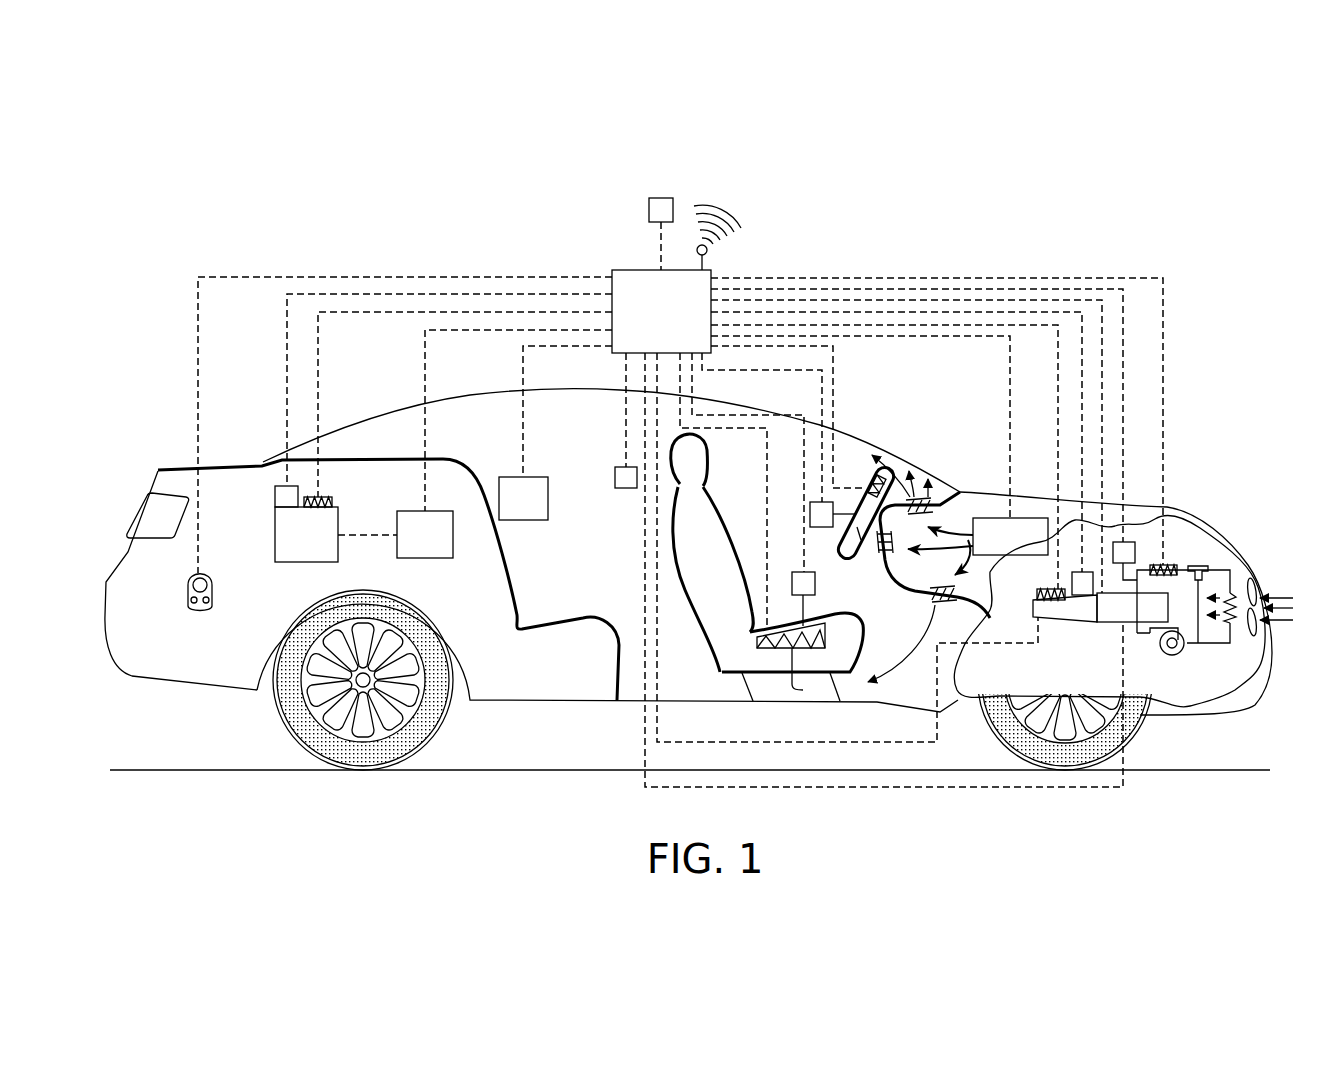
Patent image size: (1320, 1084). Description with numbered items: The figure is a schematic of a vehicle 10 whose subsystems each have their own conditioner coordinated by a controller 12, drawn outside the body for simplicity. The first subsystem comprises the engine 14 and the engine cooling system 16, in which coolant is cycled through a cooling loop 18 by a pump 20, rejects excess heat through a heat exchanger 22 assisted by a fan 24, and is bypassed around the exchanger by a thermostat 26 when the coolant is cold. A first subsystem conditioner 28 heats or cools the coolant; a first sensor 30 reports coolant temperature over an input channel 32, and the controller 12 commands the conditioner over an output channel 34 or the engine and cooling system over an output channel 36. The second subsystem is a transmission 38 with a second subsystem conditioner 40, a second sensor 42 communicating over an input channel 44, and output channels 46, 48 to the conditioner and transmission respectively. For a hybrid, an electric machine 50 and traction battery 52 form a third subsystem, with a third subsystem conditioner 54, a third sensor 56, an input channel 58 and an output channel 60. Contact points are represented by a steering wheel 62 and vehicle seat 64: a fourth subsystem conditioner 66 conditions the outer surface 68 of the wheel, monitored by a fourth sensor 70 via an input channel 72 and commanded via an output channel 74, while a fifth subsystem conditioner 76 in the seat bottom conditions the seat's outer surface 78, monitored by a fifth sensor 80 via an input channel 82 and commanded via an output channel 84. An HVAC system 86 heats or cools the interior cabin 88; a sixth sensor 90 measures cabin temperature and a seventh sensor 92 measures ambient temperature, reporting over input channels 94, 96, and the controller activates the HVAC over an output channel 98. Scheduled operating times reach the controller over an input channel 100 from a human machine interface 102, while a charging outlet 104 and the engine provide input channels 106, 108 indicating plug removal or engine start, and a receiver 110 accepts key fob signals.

The vehicle 10 is at (305, 172).
The controller 12 is at (635, 270).
The engine 14 is at (1110, 623).
The engine cooling system 16 is at (1200, 552).
The cooling loop 18 is at (1262, 663).
The pump 20 is at (1175, 657).
The heat exchanger 22 is at (1236, 597).
The fan 24 is at (1255, 588).
The thermostat 26 is at (1203, 565).
The first subsystem conditioner 28 is at (1170, 565).
The first sensor 30 is at (1135, 552).
The input channel 32 is at (1123, 439).
The output channel 34 is at (1163, 298).
The output channel 36 is at (1102, 370).
The transmission 38 is at (1062, 623).
The second subsystem conditioner 40 is at (1037, 597).
The second sensor 42 is at (1072, 583).
The input channel 44 is at (1082, 404).
The output channel 46 is at (1058, 463).
The output channel 48 is at (912, 742).
The electric machine 50 is at (453, 537).
The traction battery 52 is at (275, 548).
The third subsystem conditioner 54 is at (325, 497).
The third sensor 56 is at (275, 497).
The input channel 58 is at (287, 405).
The output channel 60 is at (318, 385).
The steering wheel 62 is at (868, 552).
The vehicle seat 64 is at (716, 493).
The fourth subsystem conditioner 66 is at (882, 473).
The outer surface 68 is at (860, 541).
The fourth sensor 70 is at (810, 518).
The input channel 72 is at (762, 372).
The output channel 74 is at (833, 383).
The fifth subsystem conditioner 76 is at (812, 675).
The outer surface 78 is at (828, 622).
The fifth sensor 80 is at (795, 572).
The input channel 82 is at (804, 470).
The output channel 84 is at (767, 478).
The HVAC system 86 is at (993, 518).
The interior cabin 88 is at (554, 452).
The sixth sensor 90 is at (626, 489).
The seventh sensor 92 is at (661, 198).
The input channel 94 is at (626, 441).
The input channel 96 is at (659, 245).
The output channel 98 is at (912, 337).
The input channel 100 is at (523, 441).
The human machine interface 102 is at (523, 520).
The charging outlet 104 is at (185, 594).
The input channel 106 is at (1123, 757).
The input channel 108 is at (312, 277).
The receiver 110 is at (708, 267).